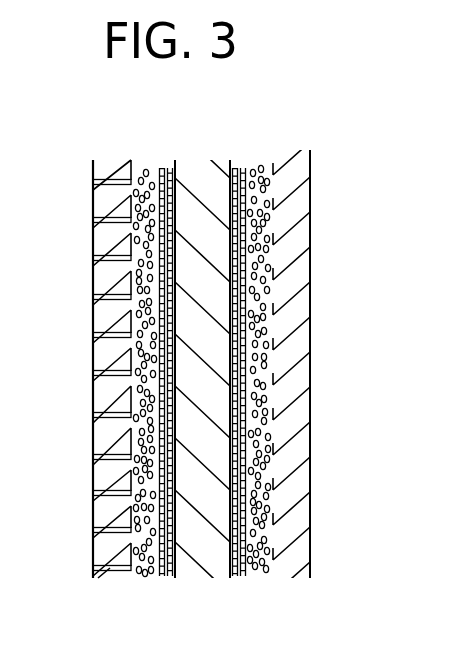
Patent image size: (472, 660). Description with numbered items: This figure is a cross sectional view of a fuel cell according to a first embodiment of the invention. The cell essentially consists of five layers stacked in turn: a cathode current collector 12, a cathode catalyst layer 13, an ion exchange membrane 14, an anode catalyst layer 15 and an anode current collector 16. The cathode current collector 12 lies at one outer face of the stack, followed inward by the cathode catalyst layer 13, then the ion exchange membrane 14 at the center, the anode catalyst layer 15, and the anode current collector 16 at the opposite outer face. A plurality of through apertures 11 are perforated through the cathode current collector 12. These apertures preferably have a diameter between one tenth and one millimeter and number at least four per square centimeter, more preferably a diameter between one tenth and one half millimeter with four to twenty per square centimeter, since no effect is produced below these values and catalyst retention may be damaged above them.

The through apertures 11 is at (93, 457).
The cathode current collector 12 is at (93, 362).
The cathode catalyst layer 13 is at (151, 168).
The ion exchange membrane 14 is at (208, 170).
The anode catalyst layer 15 is at (254, 168).
The anode current collector 16 is at (310, 362).